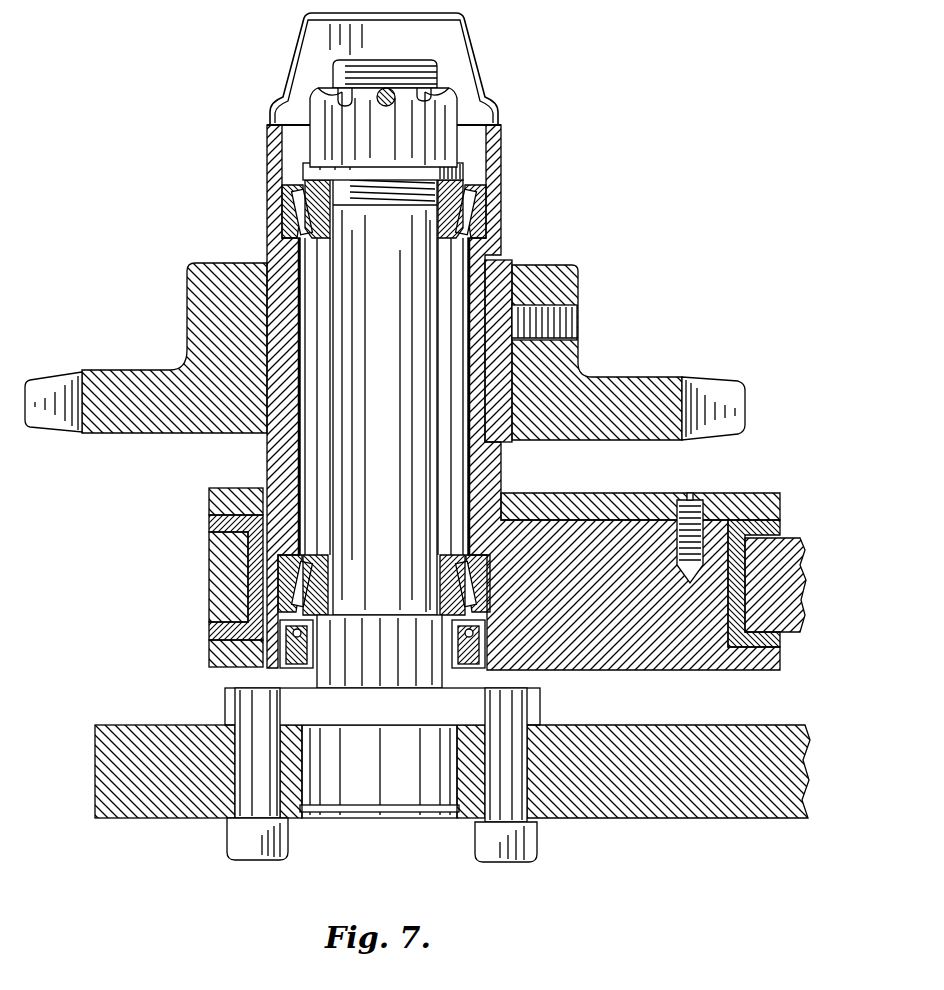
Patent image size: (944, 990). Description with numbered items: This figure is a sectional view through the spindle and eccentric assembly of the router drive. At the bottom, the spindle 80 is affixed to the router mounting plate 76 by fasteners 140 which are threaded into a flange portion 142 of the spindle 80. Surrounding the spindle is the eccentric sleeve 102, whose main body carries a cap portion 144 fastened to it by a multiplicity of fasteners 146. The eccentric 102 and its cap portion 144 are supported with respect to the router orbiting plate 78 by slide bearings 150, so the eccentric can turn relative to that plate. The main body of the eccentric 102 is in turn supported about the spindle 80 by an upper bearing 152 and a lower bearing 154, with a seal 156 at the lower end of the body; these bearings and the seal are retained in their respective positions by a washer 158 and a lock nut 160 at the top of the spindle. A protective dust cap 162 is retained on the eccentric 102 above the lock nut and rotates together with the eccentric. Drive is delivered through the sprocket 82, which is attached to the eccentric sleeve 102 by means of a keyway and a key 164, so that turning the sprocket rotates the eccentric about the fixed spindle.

The router mounting plate 76 is at (95, 800).
The router orbiting plate 78 is at (212, 628).
The spindle 80 is at (345, 800).
The sprocket 82 is at (633, 398).
The eccentric sleeve 102 is at (693, 672).
The fasteners 140 is at (230, 840).
The flange portion 142 is at (535, 715).
The cap portion 144 is at (745, 505).
The fasteners 146 is at (681, 493).
The slide bearings 150 is at (750, 540).
The upper bearing 152 is at (284, 215).
The lower bearing 154 is at (286, 585).
The seal 156 is at (282, 668).
The washer 158 is at (465, 173).
The lock nut 160 is at (462, 118).
The protective dust cap 162 is at (482, 70).
The key 164 is at (505, 262).